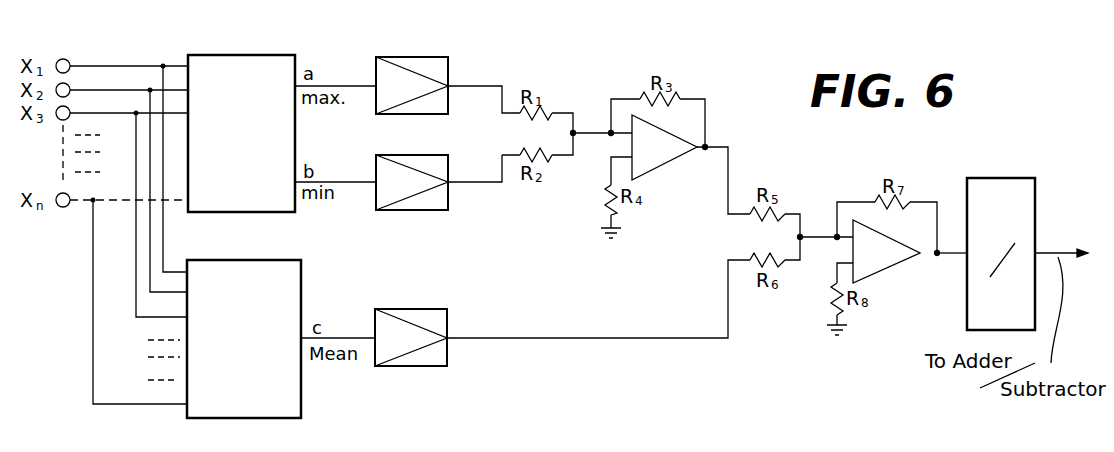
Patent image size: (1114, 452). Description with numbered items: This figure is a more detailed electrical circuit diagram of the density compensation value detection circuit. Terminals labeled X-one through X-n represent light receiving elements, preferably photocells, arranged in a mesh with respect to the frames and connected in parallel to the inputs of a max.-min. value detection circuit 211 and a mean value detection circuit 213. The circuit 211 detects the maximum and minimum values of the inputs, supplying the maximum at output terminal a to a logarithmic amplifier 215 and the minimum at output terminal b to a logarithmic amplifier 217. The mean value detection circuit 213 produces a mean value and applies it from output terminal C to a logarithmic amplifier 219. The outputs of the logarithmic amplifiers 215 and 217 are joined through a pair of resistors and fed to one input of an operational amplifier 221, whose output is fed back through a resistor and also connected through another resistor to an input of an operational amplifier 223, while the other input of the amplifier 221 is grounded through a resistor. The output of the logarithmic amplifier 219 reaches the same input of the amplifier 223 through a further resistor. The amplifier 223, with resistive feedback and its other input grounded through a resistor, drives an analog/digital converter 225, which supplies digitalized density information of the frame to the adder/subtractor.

The max.-min. value detection circuit 211 is at (233, 55).
The mean value detection circuit 213 is at (248, 420).
The logarithmic amplifier 215 is at (414, 57).
The logarithmic amplifier 217 is at (430, 212).
The logarithmic amplifier 219 is at (412, 368).
The operational amplifier 221 is at (668, 163).
The operational amplifier 223 is at (898, 266).
The analog/digital converter 225 is at (1010, 178).